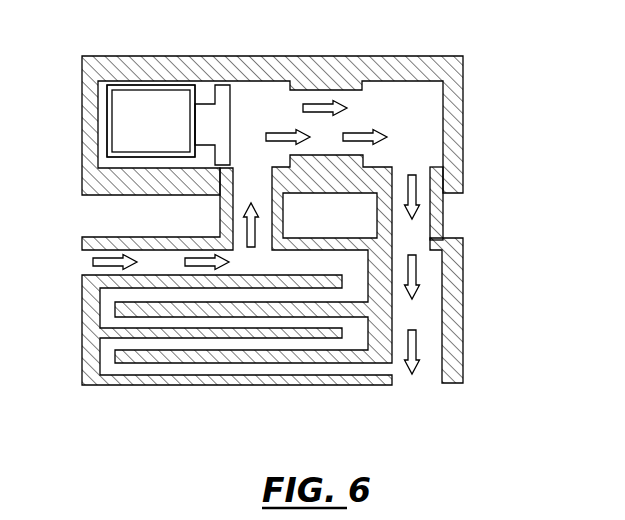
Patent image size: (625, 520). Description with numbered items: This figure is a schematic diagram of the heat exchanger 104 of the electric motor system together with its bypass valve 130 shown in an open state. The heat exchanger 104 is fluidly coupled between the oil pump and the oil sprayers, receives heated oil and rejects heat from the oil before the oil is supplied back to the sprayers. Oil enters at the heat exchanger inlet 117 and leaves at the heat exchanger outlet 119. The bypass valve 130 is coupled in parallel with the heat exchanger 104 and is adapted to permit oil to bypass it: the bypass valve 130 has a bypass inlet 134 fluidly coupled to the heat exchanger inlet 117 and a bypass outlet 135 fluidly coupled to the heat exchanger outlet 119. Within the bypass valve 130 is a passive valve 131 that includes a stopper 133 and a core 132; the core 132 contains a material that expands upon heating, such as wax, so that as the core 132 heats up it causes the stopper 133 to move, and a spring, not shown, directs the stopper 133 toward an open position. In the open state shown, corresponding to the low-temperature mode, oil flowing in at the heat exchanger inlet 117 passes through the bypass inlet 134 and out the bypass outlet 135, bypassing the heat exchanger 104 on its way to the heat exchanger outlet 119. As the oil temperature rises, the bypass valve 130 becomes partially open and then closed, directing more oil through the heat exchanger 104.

The bypass valve 130 is at (465, 70).
The valve 131 is at (175, 96).
The core 132 is at (137, 85).
The stopper 133 is at (219, 86).
The bypass inlet 134 is at (217, 230).
The bypass outlet 135 is at (445, 218).
The heat exchanger inlet 117 is at (85, 258).
The heat exchanger 104 is at (462, 312).
The heat exchanger outlet 119 is at (425, 378).